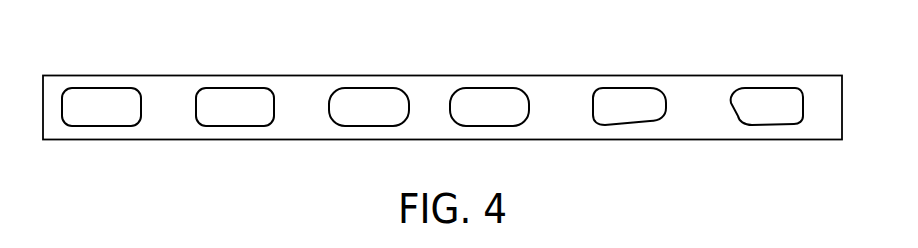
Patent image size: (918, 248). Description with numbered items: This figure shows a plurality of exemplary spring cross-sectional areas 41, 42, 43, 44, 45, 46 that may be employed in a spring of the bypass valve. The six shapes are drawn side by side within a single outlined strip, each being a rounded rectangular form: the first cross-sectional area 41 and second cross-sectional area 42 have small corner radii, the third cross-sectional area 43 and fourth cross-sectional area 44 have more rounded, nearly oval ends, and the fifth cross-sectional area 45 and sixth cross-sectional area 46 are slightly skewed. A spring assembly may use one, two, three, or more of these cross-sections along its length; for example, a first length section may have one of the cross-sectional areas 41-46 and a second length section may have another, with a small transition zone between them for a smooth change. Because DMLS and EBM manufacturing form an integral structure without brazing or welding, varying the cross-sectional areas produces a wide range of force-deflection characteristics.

The spring cross-sectional area 41 is at (100, 88).
The spring cross-sectional area 42 is at (233, 88).
The spring cross-sectional area 43 is at (368, 88).
The spring cross-sectional area 44 is at (488, 88).
The spring cross-sectional area 45 is at (630, 88).
The spring cross-sectional area 46 is at (770, 88).